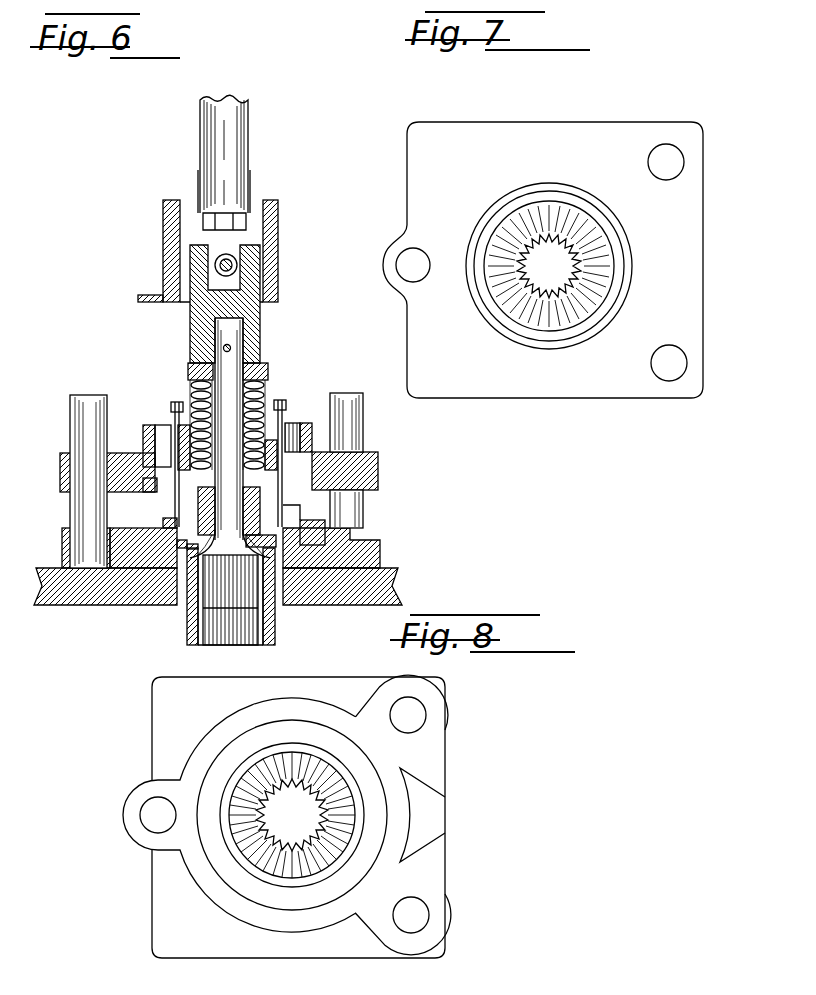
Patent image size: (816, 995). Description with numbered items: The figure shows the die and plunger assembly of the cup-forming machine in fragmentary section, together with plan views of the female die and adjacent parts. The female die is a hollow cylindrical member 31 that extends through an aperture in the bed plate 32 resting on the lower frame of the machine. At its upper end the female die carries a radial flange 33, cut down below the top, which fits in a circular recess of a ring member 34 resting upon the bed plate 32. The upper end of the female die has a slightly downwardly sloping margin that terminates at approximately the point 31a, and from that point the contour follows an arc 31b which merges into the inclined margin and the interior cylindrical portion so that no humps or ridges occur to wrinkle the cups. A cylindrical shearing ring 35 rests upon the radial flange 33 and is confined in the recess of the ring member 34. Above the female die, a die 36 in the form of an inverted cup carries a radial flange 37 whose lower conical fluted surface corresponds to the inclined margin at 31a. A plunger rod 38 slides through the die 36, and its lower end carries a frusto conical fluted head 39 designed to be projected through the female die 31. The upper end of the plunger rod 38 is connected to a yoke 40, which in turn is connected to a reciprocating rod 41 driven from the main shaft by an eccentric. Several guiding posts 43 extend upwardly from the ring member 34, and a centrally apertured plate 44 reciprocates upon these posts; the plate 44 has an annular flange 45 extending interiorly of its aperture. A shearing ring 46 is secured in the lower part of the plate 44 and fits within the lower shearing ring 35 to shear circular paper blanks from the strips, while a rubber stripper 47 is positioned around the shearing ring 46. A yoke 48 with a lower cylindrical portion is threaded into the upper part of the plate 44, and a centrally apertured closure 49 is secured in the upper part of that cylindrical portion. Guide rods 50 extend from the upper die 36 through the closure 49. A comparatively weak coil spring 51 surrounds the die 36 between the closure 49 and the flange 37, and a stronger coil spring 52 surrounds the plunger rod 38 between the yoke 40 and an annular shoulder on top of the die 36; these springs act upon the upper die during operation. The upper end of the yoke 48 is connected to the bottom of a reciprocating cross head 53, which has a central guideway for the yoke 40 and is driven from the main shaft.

In FIG. 6, the hollow cylindrical member 31 is at (275, 630).
In FIG. 8, the hollow cylindrical member 31 is at (315, 870).
In FIG. 6, the point of inclined margin 31a is at (290, 560).
In FIG. 6, the arc 31b is at (187, 550).
In FIG. 6, the bed plate 32 is at (400, 588).
In FIG. 6, the radial flange 33 is at (300, 548).
In FIG. 6, the ring member 34 is at (385, 552).
In FIG. 8, the ring member 34 is at (393, 878).
In FIG. 6, the cylindrical shearing ring 35 is at (325, 522).
In FIG. 8, the cylindrical shearing ring 35 is at (370, 822).
In FIG. 6, the die 36 is at (330, 463).
In FIG. 6, the radial flange 37 is at (177, 553).
In FIG. 7, the radial flange 37 is at (602, 300).
In FIG. 6, the plunger rod 38 is at (228, 400).
In FIG. 6, the frusto conical fluted head 39 is at (232, 600).
In FIG. 7, the frusto conical fluted head 39 is at (585, 260).
In FIG. 6, the yoke 40 is at (250, 316).
In FIG. 6, the reciprocating rod 41 is at (233, 150).
In FIG. 6, the guiding posts 43 is at (90, 408).
In FIG. 6, the centrally apertured plate 44 is at (363, 480).
In FIG. 7, the centrally apertured plate 44 is at (638, 384).
In FIG. 6, the annular flange 45 is at (148, 440).
In FIG. 6, the shearing ring 46 is at (147, 485).
In FIG. 6, the rubber stripper 47 is at (150, 505).
In FIG. 6, the yoke 48 is at (313, 437).
In FIG. 6, the centrally apertured closure 49 is at (290, 425).
In FIG. 6, the guide rods 50 is at (193, 430).
In FIG. 6, the weak coil spring 51 is at (170, 440).
In FIG. 6, the stronger coil spring 52 is at (195, 378).
In FIG. 6, the reciprocating cross head 53 is at (278, 258).